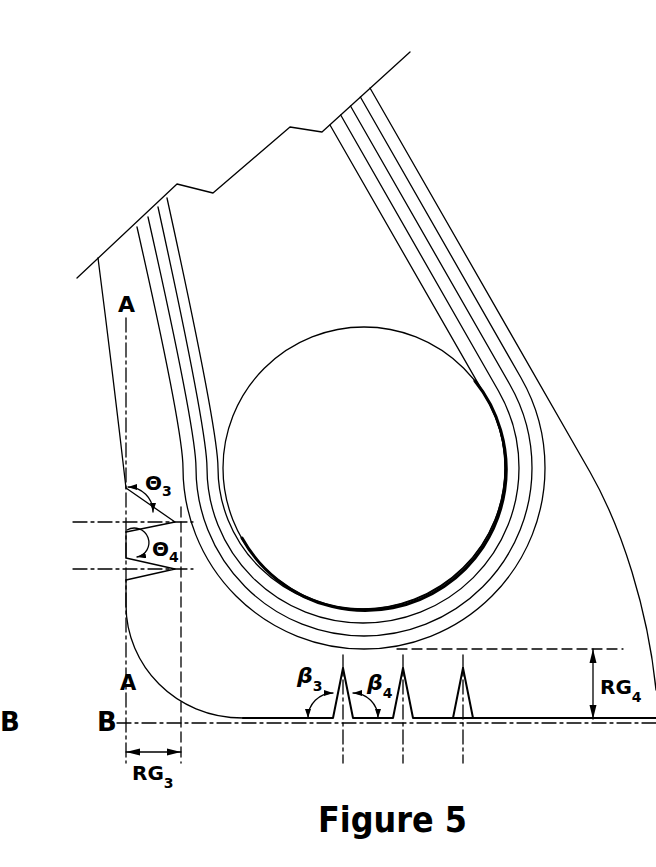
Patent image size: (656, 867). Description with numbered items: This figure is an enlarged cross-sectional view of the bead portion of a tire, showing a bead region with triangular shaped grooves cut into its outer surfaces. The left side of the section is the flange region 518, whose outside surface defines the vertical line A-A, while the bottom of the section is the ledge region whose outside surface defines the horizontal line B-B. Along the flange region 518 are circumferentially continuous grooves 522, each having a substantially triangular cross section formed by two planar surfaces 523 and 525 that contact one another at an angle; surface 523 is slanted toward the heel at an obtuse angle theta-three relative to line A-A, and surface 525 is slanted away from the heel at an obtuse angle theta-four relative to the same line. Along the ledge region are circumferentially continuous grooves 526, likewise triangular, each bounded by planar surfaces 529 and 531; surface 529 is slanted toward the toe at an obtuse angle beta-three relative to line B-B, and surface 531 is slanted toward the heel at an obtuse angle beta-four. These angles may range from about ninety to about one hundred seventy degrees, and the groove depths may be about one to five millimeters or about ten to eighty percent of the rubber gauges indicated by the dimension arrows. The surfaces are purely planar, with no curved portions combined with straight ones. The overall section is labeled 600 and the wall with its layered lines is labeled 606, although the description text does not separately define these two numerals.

The seal member 600 is at (466, 186).
The sidewall with ribs 606 is at (495, 238).
The flange region 518 is at (74, 600).
The circumferentially continuous grooves 522 is at (175, 522).
The surface 523 is at (125, 494).
The surface 525 is at (127, 541).
The circumferentially continuous grooves 526 is at (471, 712).
The surface 529 is at (458, 696).
The surface 531 is at (467, 690).